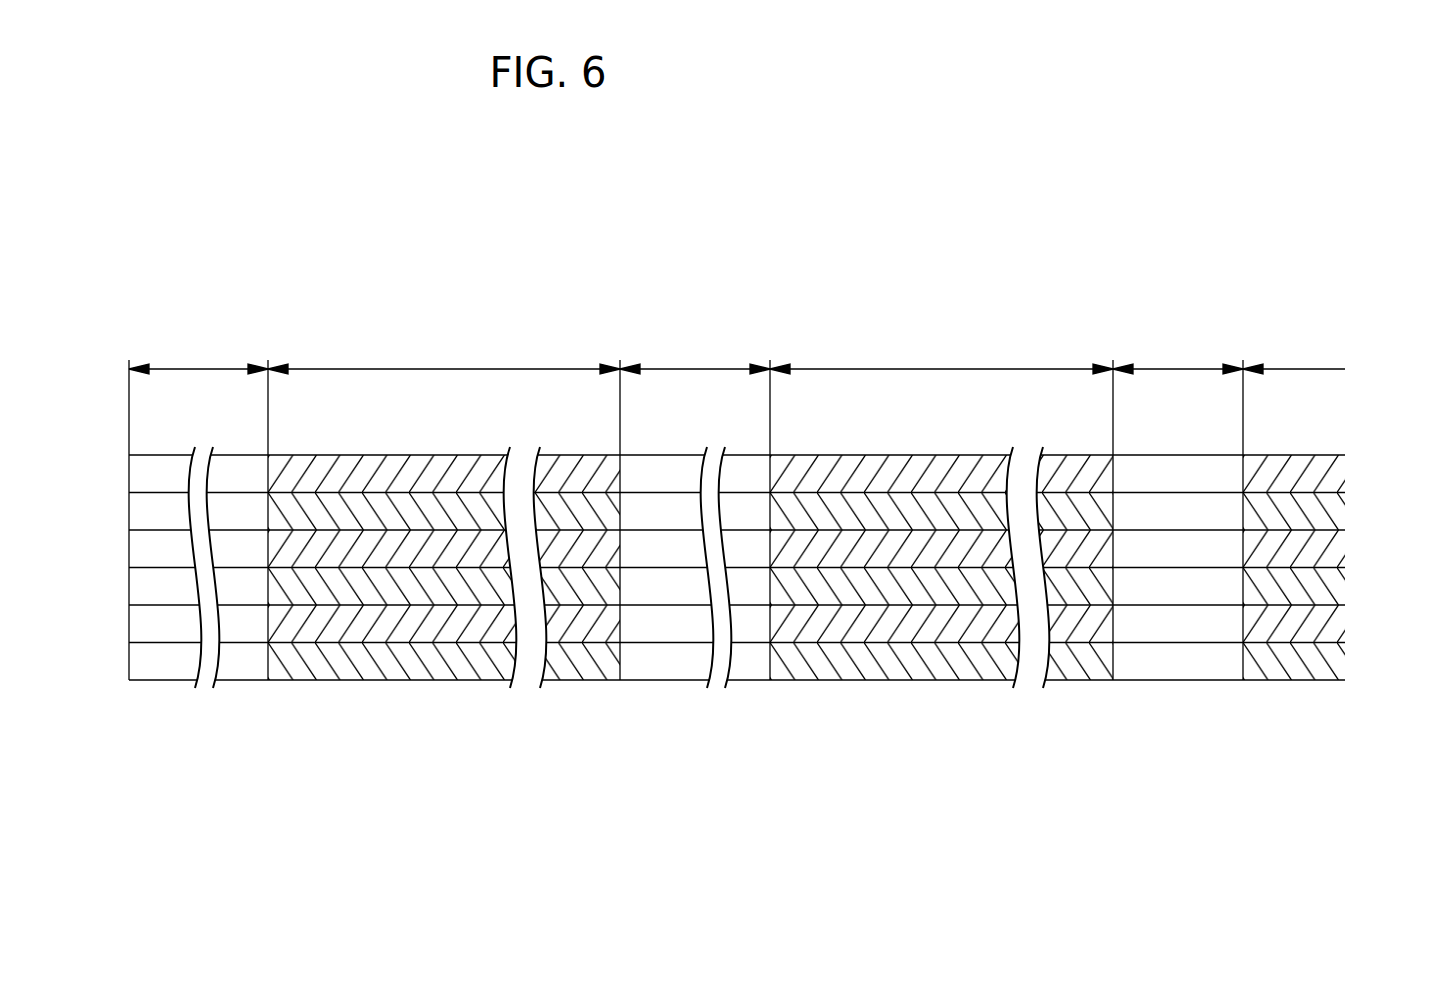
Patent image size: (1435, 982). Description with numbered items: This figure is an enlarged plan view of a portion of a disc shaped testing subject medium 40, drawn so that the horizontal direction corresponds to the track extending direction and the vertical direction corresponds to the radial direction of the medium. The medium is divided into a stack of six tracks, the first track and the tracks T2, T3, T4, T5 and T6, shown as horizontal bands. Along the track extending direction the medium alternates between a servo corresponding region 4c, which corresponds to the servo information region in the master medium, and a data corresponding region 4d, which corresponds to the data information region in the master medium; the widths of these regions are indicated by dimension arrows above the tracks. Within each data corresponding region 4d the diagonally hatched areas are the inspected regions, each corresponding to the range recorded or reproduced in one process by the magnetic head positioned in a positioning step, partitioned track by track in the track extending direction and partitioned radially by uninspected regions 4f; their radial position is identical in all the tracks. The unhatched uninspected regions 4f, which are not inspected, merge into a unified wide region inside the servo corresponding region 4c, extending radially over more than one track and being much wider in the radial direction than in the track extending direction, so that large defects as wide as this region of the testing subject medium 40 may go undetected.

The testing subject medium 40 is at (626, 296).
The servo corresponding region 4c is at (194, 366).
The data corresponding region 4d is at (467, 366).
The uninspected region 4f is at (670, 623).
The track T2 is at (1328, 512).
The track T3 is at (1328, 549).
The track T4 is at (1328, 586).
The track T5 is at (1328, 623).
The track T6 is at (1328, 660).